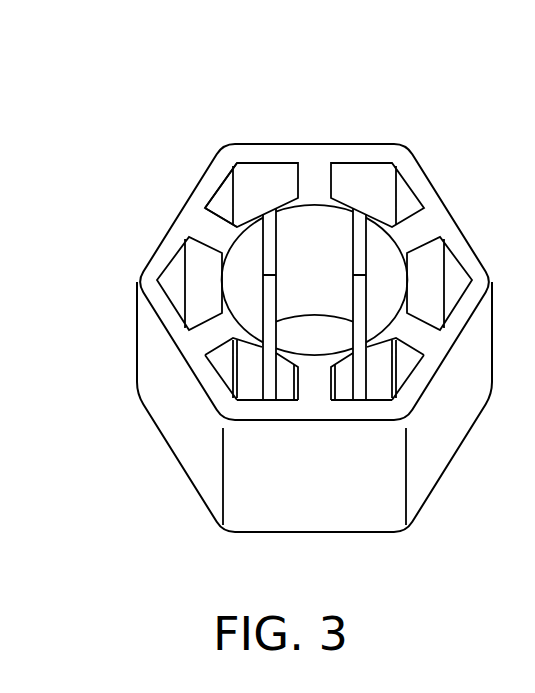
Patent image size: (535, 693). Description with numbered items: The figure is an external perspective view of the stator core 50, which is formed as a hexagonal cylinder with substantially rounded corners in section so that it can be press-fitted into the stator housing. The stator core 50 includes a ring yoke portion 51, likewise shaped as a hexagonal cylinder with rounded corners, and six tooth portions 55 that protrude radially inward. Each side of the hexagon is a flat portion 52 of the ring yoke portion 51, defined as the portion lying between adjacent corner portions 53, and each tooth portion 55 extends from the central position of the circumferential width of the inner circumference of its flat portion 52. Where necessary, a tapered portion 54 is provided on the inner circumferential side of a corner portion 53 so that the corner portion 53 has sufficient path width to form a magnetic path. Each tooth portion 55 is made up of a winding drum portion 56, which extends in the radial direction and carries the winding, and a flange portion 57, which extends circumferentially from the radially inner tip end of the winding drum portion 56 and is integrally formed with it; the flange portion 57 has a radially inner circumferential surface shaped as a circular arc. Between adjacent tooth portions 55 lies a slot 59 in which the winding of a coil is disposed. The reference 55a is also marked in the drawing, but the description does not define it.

The stator core 50 is at (312, 116).
The ring yoke portion 51 is at (362, 157).
The flat portion 52 is at (338, 143).
The corner portion 53 is at (408, 146).
The tapered portion 54 is at (380, 192).
The tooth portion 55 is at (310, 183).
The recess bottom 55a is at (248, 302).
The winding drum portion 56 is at (217, 230).
The flange portion 57 is at (223, 268).
The slot 59 is at (228, 370).